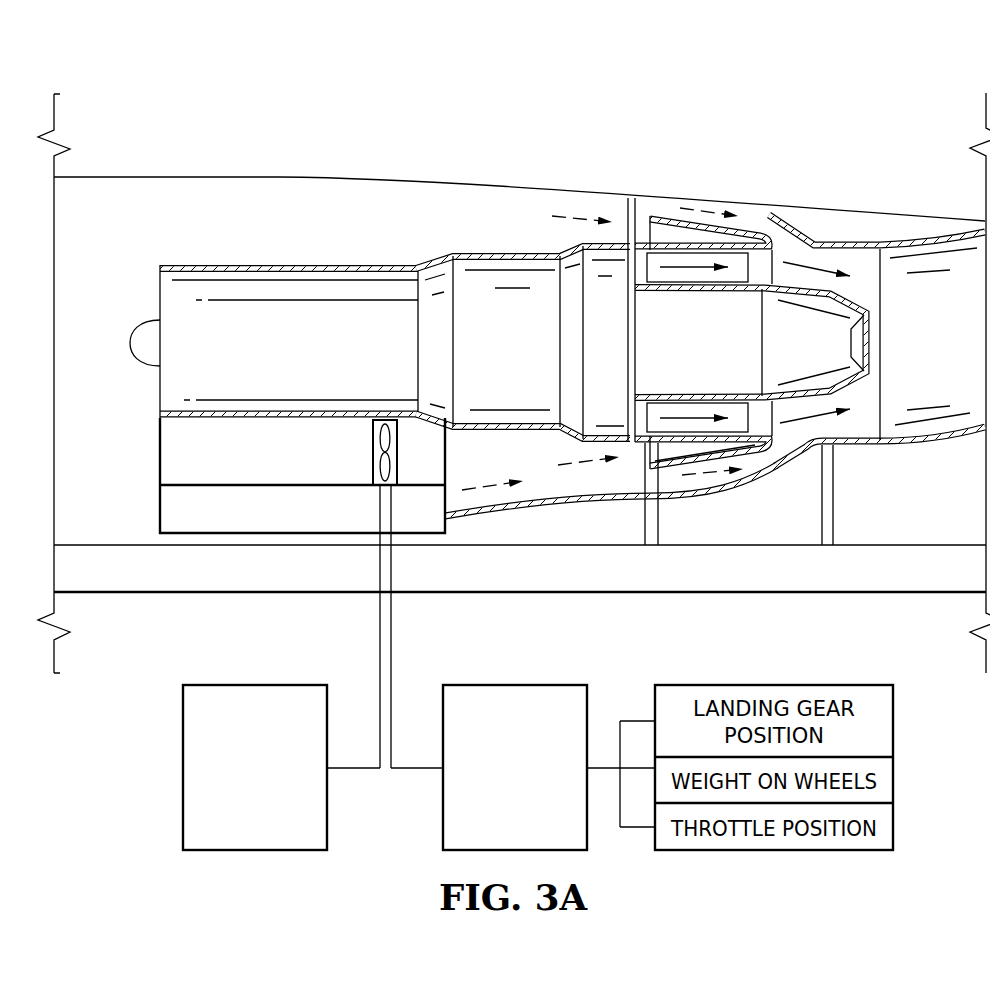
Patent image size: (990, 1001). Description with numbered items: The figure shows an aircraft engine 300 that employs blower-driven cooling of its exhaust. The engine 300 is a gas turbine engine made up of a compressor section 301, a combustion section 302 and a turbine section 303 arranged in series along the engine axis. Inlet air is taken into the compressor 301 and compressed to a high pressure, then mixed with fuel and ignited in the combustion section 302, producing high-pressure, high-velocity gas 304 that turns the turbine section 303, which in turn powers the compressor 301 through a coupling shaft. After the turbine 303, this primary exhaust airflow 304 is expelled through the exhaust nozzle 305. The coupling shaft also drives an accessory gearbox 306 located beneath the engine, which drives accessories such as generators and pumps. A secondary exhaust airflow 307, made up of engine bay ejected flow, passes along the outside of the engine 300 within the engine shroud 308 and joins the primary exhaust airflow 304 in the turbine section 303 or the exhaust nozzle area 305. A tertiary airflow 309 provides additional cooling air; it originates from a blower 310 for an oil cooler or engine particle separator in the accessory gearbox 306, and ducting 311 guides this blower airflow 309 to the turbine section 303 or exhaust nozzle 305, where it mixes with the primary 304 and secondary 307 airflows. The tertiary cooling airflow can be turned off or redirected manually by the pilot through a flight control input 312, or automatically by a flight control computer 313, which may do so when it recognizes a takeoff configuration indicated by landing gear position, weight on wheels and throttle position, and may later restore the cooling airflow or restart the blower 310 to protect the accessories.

The aircraft engine 300 is at (305, 60).
The compressor section 301 is at (248, 250).
The combustion section 302 is at (503, 216).
The turbine section 303 is at (761, 178).
The primary exhaust airflow 304 is at (681, 266).
The exhaust nozzle 305 is at (877, 198).
The accessory gearbox 306 is at (165, 447).
The secondary exhaust airflow 307 is at (580, 213).
The engine shroud 308 is at (305, 175).
The tertiary airflow 309 is at (484, 487).
The blower 310 is at (373, 440).
The ducting 311 is at (752, 479).
The flight control input 312 is at (235, 817).
The flight control computer 313 is at (495, 833).